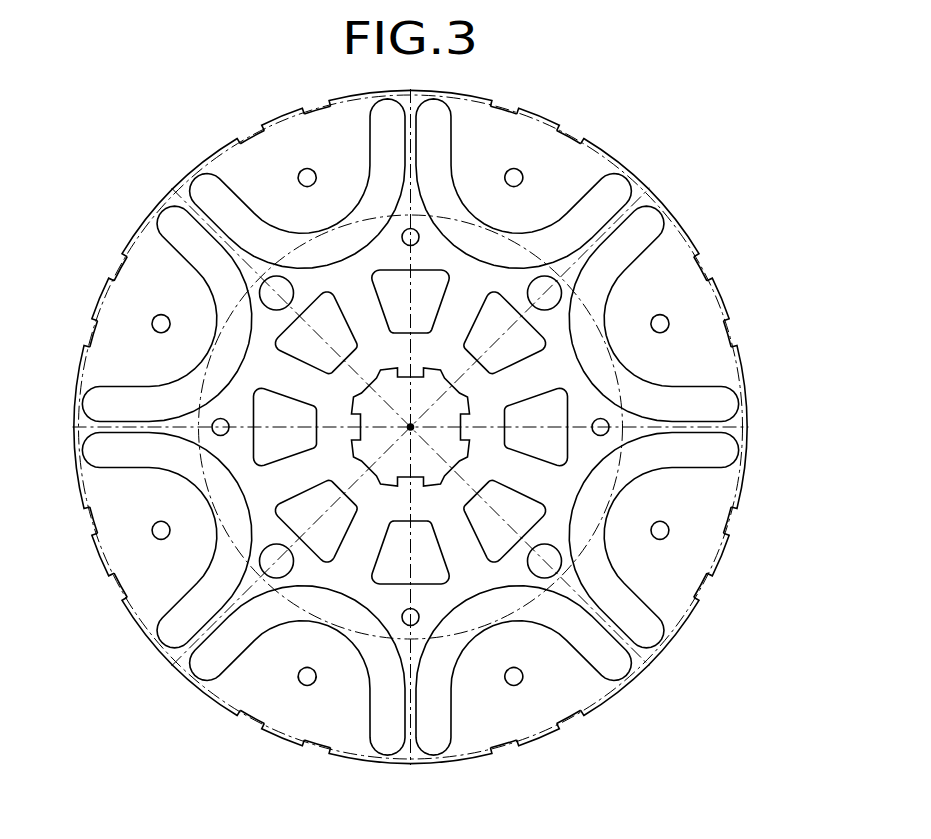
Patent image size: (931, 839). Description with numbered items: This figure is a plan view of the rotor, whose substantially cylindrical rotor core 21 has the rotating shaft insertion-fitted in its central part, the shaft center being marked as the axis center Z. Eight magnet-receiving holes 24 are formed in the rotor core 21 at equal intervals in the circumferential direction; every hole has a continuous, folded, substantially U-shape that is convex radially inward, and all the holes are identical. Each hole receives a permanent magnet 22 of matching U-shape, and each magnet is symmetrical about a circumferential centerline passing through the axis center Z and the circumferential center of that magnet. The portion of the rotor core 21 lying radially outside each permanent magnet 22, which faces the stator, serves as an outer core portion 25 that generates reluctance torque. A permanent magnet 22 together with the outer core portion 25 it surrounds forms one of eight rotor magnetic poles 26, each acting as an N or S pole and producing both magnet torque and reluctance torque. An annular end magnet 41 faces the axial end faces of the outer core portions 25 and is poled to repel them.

The rotor core 21 is at (416, 426).
The permanent magnet 22 is at (419, 427).
The magnet-receiving hole 24 is at (436, 447).
The outer core portion 25 is at (448, 460).
The rotor magnetic pole 26 is at (433, 464).
The annular end magnet 41 is at (458, 427).
The axis center Z is at (409, 383).